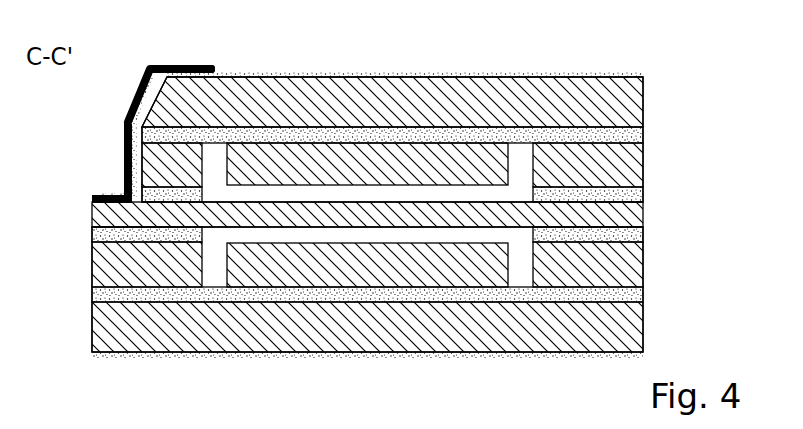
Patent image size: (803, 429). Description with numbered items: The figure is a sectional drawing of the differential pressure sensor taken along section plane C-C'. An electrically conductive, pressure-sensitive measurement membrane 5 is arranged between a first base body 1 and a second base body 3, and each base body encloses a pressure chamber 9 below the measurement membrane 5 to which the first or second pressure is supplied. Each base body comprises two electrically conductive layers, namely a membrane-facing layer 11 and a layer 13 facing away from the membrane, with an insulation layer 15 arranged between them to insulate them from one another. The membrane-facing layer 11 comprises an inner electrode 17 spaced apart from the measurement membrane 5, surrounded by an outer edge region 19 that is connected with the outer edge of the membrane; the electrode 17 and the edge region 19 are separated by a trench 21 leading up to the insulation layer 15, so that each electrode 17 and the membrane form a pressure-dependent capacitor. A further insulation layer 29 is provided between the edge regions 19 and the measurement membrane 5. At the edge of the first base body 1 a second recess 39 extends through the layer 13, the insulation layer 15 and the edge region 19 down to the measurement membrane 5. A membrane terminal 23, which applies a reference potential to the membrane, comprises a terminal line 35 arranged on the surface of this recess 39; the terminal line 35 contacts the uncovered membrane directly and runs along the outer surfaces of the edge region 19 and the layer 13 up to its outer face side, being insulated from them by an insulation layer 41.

The first base body 1 is at (731, 75).
The second base body 3 is at (731, 233).
The measurement membrane 5 is at (632, 217).
The pressure chamber 9 is at (435, 192).
The membrane-facing layer 11 is at (661, 167).
The layer facing away from the membrane 13 is at (661, 98).
The insulation layer 15 is at (611, 135).
The electrode 17 is at (332, 157).
The edge region 19 is at (155, 162).
The trench 21 is at (520, 155).
The membrane terminal 23 is at (147, 64).
The insulation layer 29 is at (157, 192).
The terminal line 35 is at (125, 135).
The second recess 39 is at (107, 110).
The insulation layer 41 is at (143, 93).